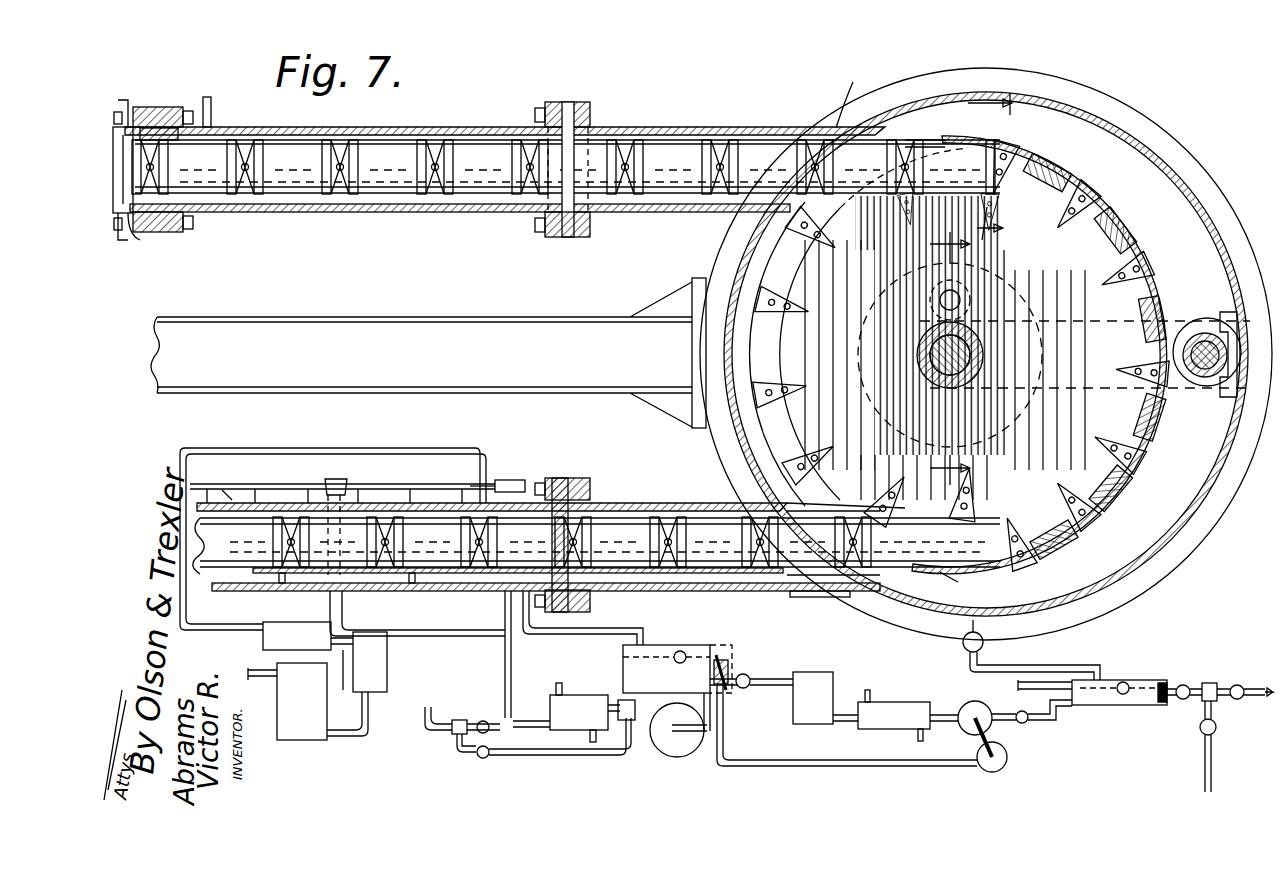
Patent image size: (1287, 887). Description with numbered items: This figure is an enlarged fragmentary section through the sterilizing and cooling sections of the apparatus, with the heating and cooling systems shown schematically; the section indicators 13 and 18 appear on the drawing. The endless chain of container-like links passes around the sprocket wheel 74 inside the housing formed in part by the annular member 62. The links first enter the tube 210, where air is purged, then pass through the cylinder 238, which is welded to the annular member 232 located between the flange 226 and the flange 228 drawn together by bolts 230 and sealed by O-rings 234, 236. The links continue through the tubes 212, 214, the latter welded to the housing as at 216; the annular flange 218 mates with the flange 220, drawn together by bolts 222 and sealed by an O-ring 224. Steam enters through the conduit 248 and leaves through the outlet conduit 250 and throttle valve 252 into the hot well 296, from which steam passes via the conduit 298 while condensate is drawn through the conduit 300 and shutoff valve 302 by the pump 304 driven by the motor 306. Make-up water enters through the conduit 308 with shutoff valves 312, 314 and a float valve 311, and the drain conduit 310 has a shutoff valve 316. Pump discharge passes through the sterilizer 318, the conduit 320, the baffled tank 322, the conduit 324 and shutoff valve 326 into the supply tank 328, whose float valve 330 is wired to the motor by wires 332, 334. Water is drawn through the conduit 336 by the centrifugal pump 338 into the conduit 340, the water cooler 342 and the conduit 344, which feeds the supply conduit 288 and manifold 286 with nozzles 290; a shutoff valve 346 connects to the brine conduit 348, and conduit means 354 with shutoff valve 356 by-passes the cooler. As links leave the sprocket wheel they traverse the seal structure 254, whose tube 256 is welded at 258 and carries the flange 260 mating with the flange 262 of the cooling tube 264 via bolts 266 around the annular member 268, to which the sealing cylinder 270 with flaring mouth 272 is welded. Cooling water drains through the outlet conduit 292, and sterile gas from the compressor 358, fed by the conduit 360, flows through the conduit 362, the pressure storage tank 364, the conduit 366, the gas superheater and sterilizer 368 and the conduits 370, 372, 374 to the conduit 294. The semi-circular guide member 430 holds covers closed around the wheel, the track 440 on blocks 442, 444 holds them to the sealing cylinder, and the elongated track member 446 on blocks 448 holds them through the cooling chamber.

The section line 13 is at (935, 358).
The section line 18 is at (980, 165).
The annular member 62 is at (1148, 170).
The sprocket wheel 74 is at (795, 258).
The tube 210 is at (118, 213).
The tube 212 is at (385, 127).
The tube 214 is at (695, 127).
The weld 216 is at (853, 94).
The annular flange 218 is at (592, 122).
The flange 220 is at (550, 104).
The bolts 222 is at (536, 112).
The O-ring 224 is at (578, 112).
The flange 226 is at (178, 130).
The flange 228 is at (150, 107).
The bolts 230 is at (118, 112).
The annular member 232 is at (188, 111).
The O-ring 234 is at (186, 232).
The O-ring 236 is at (186, 218).
The cylinder 238 is at (130, 232).
The conduit 248 is at (212, 108).
The outlet conduit 250 is at (988, 662).
The throttle valve 252 is at (963, 646).
The seal structure 254 is at (641, 498).
The tube 256 is at (667, 503).
The weld 258 is at (742, 503).
The flange 260 is at (570, 480).
The flange 262 is at (547, 480).
The tube 264 is at (497, 481).
The bolts 266 is at (537, 484).
The annular member 268 is at (562, 478).
The sealing cylinder 270 is at (590, 503).
The flaring mouth 272 is at (766, 592).
The manifold 286 is at (272, 486).
The supply conduit 288 is at (346, 631).
The nozzles 290 is at (230, 486).
The outlet conduit 292 is at (530, 640).
The conduit 294 is at (470, 486).
The hot well 296 is at (1120, 706).
The conduit 298 is at (1076, 682).
The conduit 300 is at (1035, 722).
The shutoff valve 302 is at (1022, 724).
The pump 304 is at (970, 703).
The motor 306 is at (990, 772).
The conduit 308 is at (1240, 684).
The drain conduit 310 is at (1205, 769).
The float valve 311 is at (1160, 706).
The shutoff valve 312 is at (1208, 683).
The shutoff valve 314 is at (1183, 685).
The shutoff valve 316 is at (1217, 731).
The sterilizer 318 is at (895, 702).
The conduit 320 is at (845, 714).
The tank 322 is at (793, 714).
The conduit 324 is at (805, 672).
The shutoff valve 326 is at (745, 690).
The cooling water circulating supply tank 328 is at (566, 701).
The float valve 330 is at (716, 655).
The wire 332 is at (790, 752).
The wire 334 is at (812, 768).
The conduit 336 is at (716, 735).
The centrifugal pump 338 is at (672, 755).
The conduit 340 is at (652, 740).
The water cooler 342 is at (623, 662).
The conduit 344 is at (545, 677).
The shutoff valve 346 is at (483, 720).
The conduit 348 is at (427, 708).
The conduit means 354 is at (553, 756).
The shutoff valve 356 is at (481, 758).
The compressor 358 is at (295, 738).
The conduit 360 is at (258, 663).
The conduit 362 is at (358, 738).
The pressure storage tank 364 is at (390, 652).
The conduit 366 is at (344, 712).
The gas superheater and sterilizer 368 is at (290, 624).
The conduit 370 is at (196, 630).
The conduit 372 is at (180, 452).
The conduit 374 is at (346, 448).
The semi-circular guide member 430 is at (1142, 216).
The track 440 is at (943, 576).
The block 442 is at (828, 592).
The block 444 is at (870, 592).
The elongated track member 446 is at (415, 560).
The blocks 448 is at (282, 583).